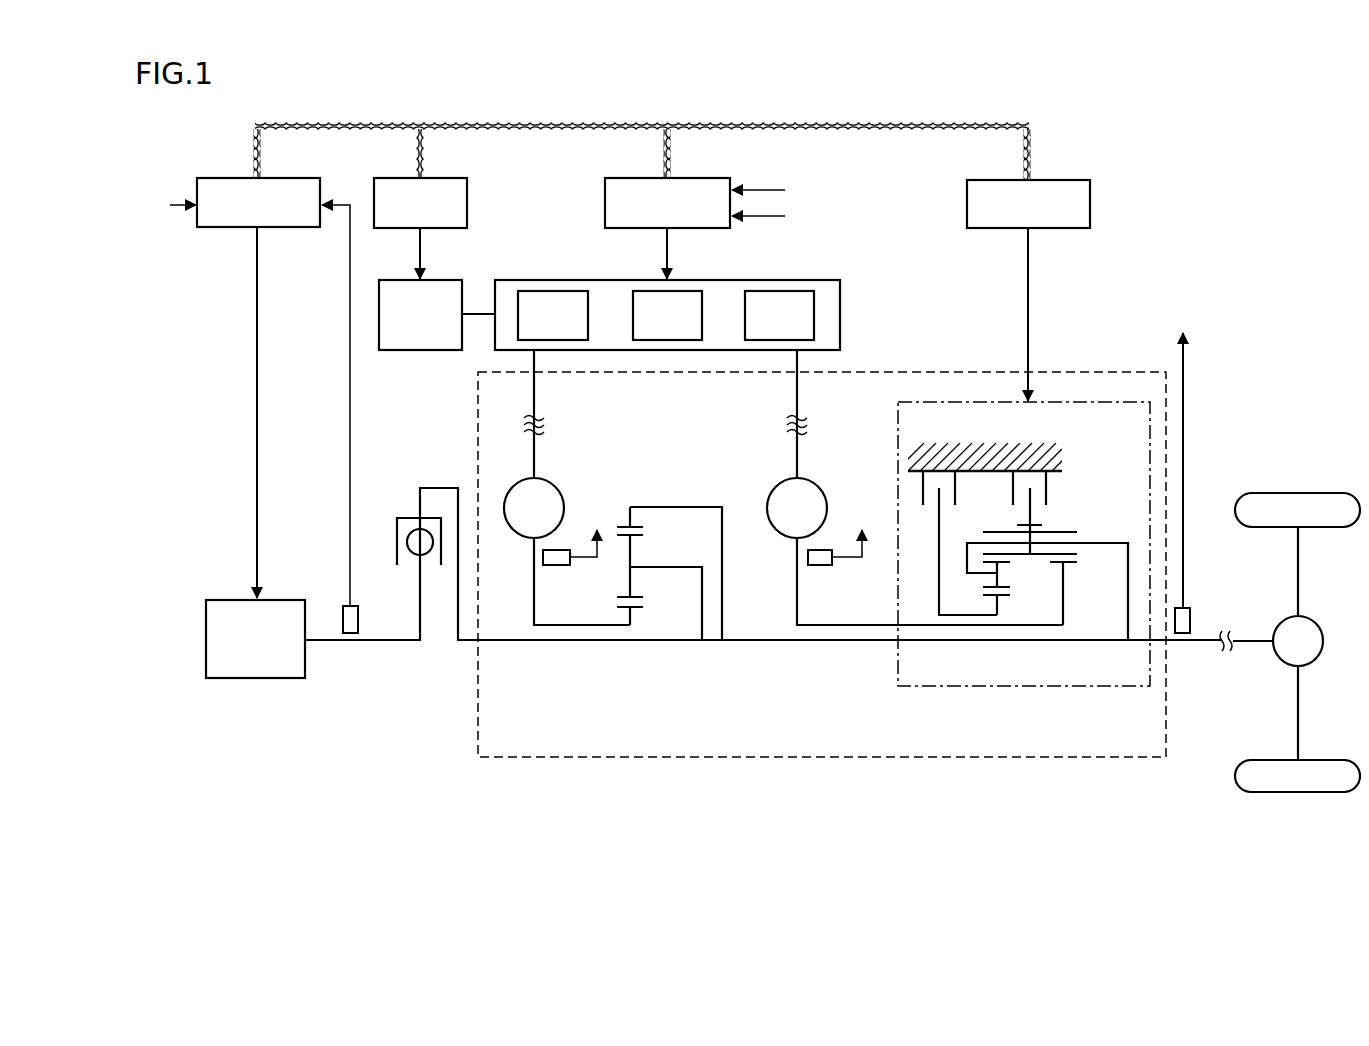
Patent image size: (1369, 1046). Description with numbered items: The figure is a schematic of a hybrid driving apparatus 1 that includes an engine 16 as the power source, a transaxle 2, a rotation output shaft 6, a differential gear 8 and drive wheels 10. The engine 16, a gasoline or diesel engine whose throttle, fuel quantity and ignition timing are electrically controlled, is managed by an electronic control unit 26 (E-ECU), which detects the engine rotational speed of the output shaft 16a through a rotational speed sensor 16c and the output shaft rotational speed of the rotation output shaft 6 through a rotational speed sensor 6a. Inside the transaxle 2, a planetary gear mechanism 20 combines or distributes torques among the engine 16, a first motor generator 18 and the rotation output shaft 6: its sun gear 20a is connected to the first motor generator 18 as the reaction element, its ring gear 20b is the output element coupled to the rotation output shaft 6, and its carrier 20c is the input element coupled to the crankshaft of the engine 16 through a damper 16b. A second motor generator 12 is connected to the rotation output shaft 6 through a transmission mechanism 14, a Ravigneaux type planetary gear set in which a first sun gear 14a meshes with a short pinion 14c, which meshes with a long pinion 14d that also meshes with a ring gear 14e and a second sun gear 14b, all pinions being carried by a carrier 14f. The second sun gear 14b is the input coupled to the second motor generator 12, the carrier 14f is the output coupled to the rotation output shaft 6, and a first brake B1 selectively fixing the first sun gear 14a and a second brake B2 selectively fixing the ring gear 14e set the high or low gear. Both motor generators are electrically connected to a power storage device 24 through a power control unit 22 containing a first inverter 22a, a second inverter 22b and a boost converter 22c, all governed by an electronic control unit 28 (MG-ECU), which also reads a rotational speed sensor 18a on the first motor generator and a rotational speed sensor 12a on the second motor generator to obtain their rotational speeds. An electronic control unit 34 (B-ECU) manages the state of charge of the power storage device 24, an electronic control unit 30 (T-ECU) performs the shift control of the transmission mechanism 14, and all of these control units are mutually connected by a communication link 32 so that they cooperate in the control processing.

The hybrid driving apparatus 1 is at (1310, 128).
The transaxle 2 is at (1047, 757).
The rotation output shaft 6 is at (1197, 645).
The rotational speed sensor 6a is at (1190, 618).
The differential gear 8 is at (1316, 626).
The drive wheels 10 is at (1300, 493).
The second motor generator 12 is at (818, 484).
The rotational speed sensor 12a is at (820, 565).
The transmission mechanism 14 is at (1024, 571).
The first sun gear 14a is at (1004, 597).
The second sun gear 14b is at (1066, 566).
The short pinion 14c is at (1011, 591).
The long pinion 14d is at (992, 531).
The ring gear 14e is at (1042, 525).
The carrier 14f is at (1128, 543).
The engine 16 is at (265, 678).
The output shaft 16a is at (395, 641).
The damper 16b is at (402, 517).
The rotational speed sensor 16c is at (358, 620).
The first motor generator 18 is at (556, 484).
The rotational speed sensor 18a is at (558, 565).
The planetary gear mechanism 20 is at (642, 608).
The sun gear 20a is at (643, 607).
The ring gear 20b is at (643, 530).
The carrier 20c is at (679, 567).
The power control unit 22 is at (698, 296).
The first inverter 22a is at (558, 291).
The second inverter 22b is at (688, 291).
The boost converter 22c is at (781, 291).
The power storage device 24 is at (440, 280).
The electronic control unit for engine 26 is at (272, 178).
The electronic control unit for motor generators 28 is at (700, 178).
The electronic control unit for shift control 30 is at (1062, 180).
The communication link 32 is at (993, 124).
The electronic control unit for battery 34 is at (444, 178).
The first brake B1 is at (924, 503).
The second brake B2 is at (1047, 492).